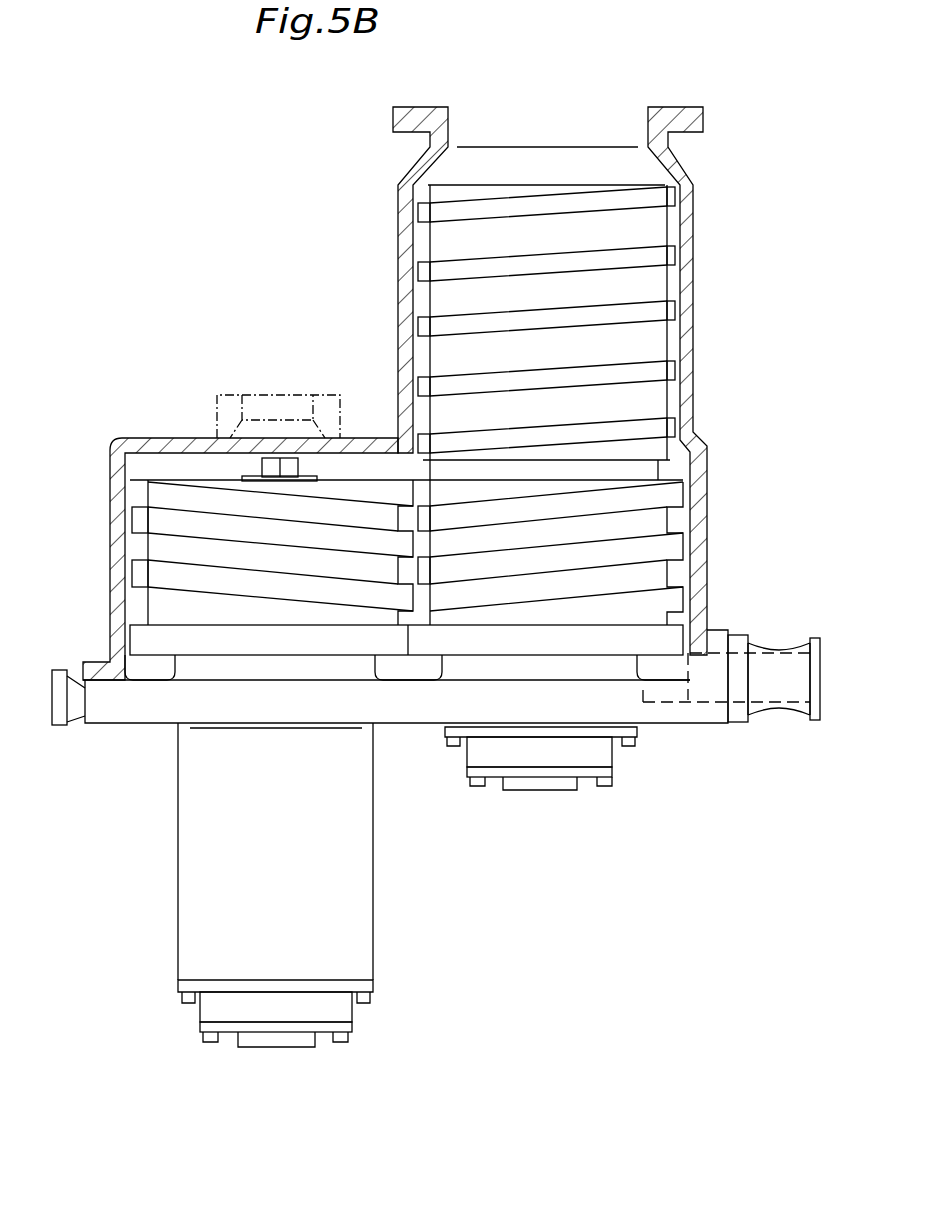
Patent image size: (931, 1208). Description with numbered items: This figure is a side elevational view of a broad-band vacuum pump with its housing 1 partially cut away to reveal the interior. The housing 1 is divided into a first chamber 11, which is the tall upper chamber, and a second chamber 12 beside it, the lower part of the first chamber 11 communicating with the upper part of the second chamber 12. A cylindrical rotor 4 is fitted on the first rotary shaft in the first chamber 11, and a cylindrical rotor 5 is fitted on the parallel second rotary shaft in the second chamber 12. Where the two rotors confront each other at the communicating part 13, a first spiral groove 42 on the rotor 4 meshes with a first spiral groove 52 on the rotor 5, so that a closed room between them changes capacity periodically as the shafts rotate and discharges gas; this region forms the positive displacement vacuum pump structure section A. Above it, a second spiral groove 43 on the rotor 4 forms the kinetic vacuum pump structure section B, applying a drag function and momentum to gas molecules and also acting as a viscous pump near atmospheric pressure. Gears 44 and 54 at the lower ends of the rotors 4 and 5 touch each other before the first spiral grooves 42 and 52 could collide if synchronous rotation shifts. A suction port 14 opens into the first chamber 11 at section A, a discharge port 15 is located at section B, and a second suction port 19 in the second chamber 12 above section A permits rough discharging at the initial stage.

The housing 1 is at (712, 454).
The cylindrical rotor 4 is at (650, 405).
The cylindrical rotor 5 is at (150, 608).
The first chamber 11 is at (653, 180).
The second chamber 12 is at (157, 468).
The communicating part 13 is at (410, 670).
The suction port 14 is at (570, 125).
The discharge port 15 is at (820, 688).
The second suction port 19 is at (275, 400).
The first spiral groove 42 is at (680, 521).
The second spiral groove 43 is at (685, 292).
The gear 44 is at (668, 642).
The first spiral groove 52 is at (135, 543).
The gear 54 is at (143, 640).
The positive displacement vacuum pump structure section A is at (412, 473).
The kinetic vacuum pump structure section B is at (420, 298).